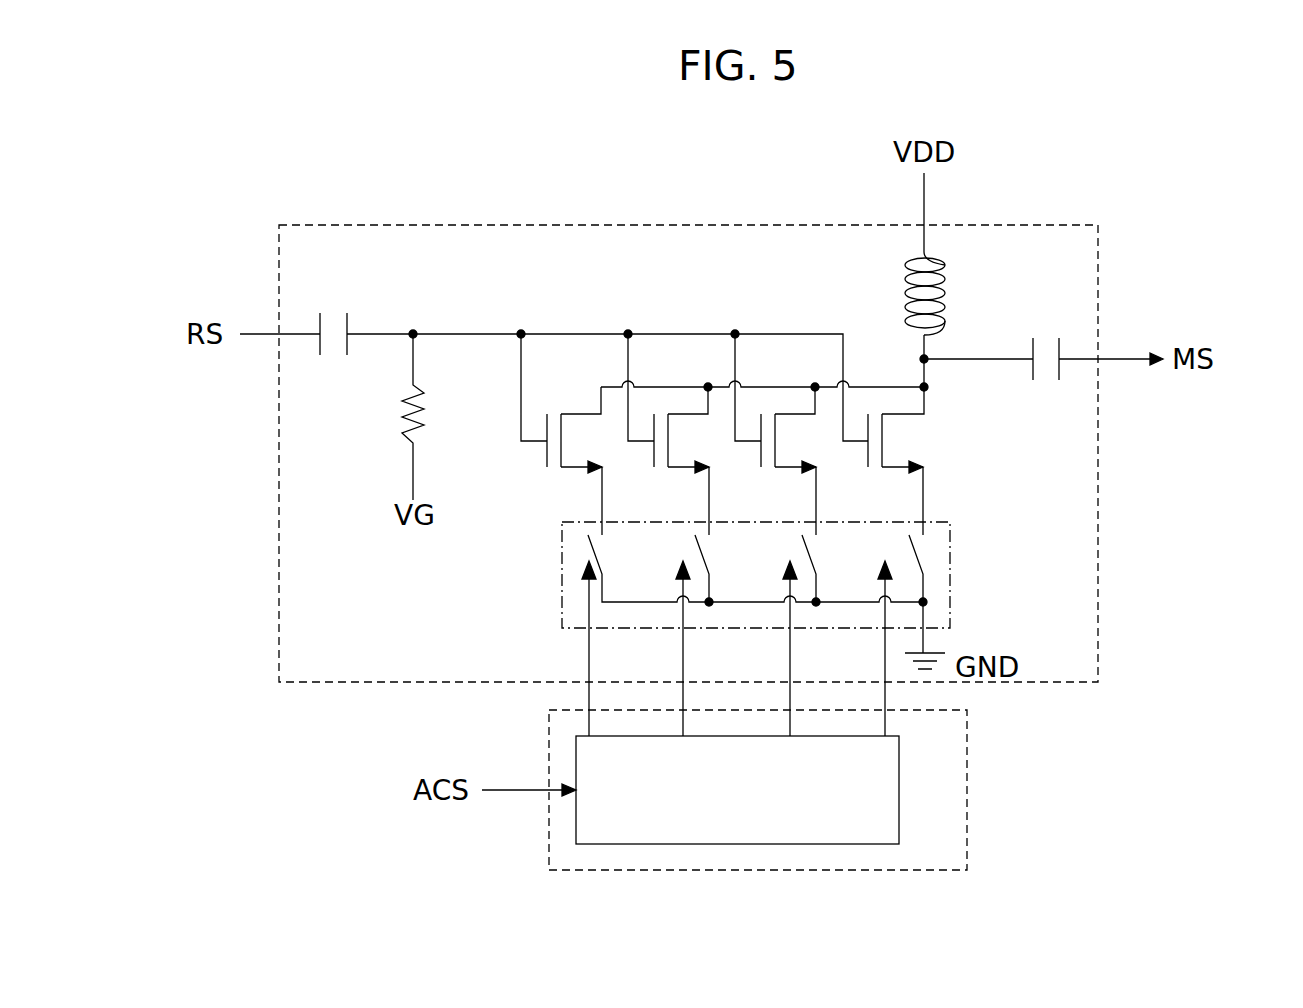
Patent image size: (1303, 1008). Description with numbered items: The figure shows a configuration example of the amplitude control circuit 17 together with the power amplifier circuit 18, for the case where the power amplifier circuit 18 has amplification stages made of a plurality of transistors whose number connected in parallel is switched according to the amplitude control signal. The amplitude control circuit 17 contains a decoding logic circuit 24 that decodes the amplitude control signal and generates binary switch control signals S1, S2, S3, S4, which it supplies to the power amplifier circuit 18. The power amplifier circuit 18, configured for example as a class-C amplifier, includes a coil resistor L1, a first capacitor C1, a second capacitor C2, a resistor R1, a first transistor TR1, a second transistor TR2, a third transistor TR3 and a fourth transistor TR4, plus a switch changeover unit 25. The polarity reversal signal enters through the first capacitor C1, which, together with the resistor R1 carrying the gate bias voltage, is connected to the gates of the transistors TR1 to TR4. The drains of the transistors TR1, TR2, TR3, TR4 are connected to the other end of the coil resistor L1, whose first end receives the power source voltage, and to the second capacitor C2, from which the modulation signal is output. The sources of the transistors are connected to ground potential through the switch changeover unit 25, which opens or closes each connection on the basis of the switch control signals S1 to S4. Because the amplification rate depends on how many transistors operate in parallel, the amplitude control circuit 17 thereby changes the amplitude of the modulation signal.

The power amplifier circuit 18 is at (1068, 225).
The amplitude control circuit 17 is at (967, 745).
The decoding logic circuit 24 is at (899, 760).
The switch changeover unit 25 is at (955, 578).
The first capacitor C1 is at (350, 320).
The second capacitor C2 is at (1030, 340).
The resistor R1 is at (405, 400).
The coil resistor L1 is at (945, 268).
The first transistor TR1 is at (931, 472).
The second transistor TR2 is at (824, 472).
The third transistor TR3 is at (717, 472).
The fourth transistor TR4 is at (610, 472).
The switch control signal S1 is at (867, 648).
The switch control signal S2 is at (772, 648).
The switch control signal S3 is at (665, 648).
The switch control signal S4 is at (571, 648).